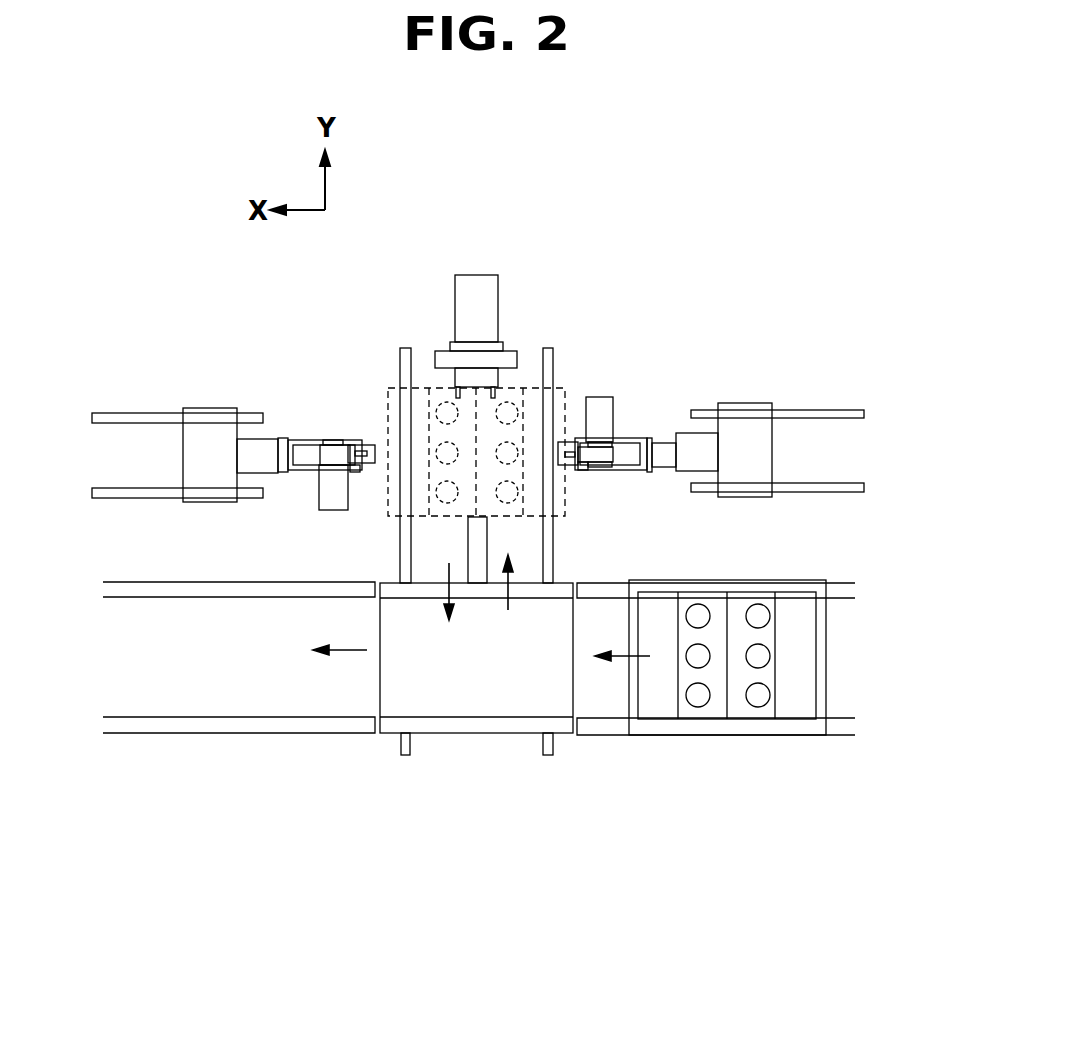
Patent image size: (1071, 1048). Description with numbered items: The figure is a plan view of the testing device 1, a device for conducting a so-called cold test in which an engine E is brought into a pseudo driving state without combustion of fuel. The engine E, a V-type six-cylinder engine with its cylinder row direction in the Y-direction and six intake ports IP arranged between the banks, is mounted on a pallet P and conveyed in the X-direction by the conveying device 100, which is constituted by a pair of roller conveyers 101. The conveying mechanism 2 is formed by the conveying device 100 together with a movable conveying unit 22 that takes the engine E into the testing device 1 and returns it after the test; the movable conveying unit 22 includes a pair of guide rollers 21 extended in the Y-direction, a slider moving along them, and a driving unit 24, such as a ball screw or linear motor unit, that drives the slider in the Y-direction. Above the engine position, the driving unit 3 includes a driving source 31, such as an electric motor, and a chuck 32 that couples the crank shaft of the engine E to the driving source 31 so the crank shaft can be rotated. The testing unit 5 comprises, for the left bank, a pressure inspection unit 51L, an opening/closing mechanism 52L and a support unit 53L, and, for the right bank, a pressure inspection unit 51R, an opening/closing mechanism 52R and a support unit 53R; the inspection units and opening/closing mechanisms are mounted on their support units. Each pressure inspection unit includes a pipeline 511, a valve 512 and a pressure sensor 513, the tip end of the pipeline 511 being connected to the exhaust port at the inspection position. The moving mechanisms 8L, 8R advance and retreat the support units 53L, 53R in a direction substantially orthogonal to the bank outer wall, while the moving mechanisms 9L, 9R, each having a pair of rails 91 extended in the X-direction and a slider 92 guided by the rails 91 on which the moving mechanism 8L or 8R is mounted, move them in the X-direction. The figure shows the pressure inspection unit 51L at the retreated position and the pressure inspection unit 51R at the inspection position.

The testing device 1 is at (727, 228).
The conveying mechanism 2 is at (470, 620).
The driving unit 3 is at (524, 278).
The testing unit 5 is at (767, 318).
The moving mechanism 8L is at (272, 438).
The moving mechanism 8R is at (690, 472).
The moving mechanism 9L is at (478, 412).
The moving mechanism 9R is at (826, 350).
The guide rollers 21 is at (403, 757).
The movable conveying unit 22 is at (458, 735).
The driving unit 24 is at (480, 538).
The driving source 31 is at (496, 305).
The chuck 32 is at (453, 378).
The pressure inspection unit 51L is at (320, 376).
The pressure inspection unit 51R is at (664, 383).
The opening/closing mechanism 52L is at (330, 511).
The opening/closing mechanism 52R is at (600, 396).
The support unit 53L is at (282, 473).
The support unit 53R is at (669, 431).
The rails 91 is at (130, 410).
The slider 92 is at (170, 338).
The conveying device 100 is at (479, 706).
The roller conveyers 101 is at (190, 598).
The pipeline 511 is at (370, 444).
The valve 512 is at (333, 440).
The pressure sensor 513 is at (358, 472).
The engine E is at (565, 390).
The intake port IP is at (447, 504).
The pallet P is at (800, 736).